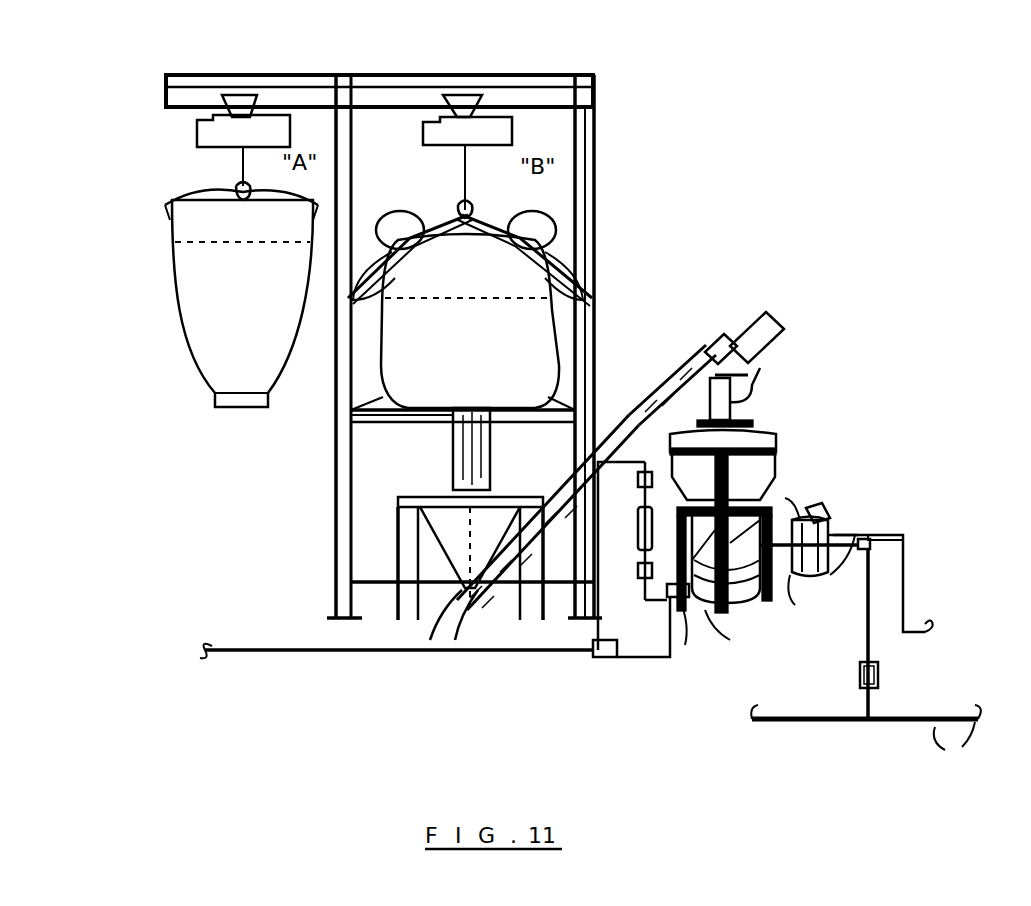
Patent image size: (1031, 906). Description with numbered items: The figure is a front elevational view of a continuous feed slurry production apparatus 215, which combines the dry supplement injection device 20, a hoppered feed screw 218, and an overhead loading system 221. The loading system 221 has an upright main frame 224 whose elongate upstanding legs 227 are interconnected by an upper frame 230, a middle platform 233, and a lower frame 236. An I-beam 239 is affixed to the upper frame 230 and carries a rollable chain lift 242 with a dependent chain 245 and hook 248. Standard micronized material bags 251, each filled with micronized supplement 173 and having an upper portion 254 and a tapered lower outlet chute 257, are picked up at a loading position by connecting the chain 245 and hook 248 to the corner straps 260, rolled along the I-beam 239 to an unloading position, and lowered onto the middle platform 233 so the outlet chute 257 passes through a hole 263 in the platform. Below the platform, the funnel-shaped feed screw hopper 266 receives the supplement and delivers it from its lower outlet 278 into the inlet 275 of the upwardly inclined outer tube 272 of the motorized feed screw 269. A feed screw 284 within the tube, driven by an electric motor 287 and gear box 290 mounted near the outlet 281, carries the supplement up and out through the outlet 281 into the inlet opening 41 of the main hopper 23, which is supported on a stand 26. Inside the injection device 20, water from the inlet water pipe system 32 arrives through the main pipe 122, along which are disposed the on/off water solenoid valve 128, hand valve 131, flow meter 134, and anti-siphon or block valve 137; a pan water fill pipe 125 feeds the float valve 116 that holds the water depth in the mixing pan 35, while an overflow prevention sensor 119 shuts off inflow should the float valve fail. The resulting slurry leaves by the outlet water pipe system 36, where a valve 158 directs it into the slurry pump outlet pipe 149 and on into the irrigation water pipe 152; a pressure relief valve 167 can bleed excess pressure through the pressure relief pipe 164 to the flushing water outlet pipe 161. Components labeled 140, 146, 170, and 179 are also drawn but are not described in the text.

The injection device 20 is at (812, 400).
The main hopper 23 is at (783, 443).
The stand 26 is at (790, 540).
The inlet water pipe system 32 is at (676, 600).
The mixing pan 35 is at (750, 615).
The outlet water pipe system 36 is at (868, 520).
The inlet opening 41 is at (750, 415).
The float valve 116 is at (697, 637).
The overflow prevention sensor 119 is at (731, 640).
The main pipe 122 is at (325, 652).
The pan water fill pipe 125 is at (615, 635).
The on/off water solenoid valve 128 is at (600, 658).
The hand valve 131 is at (636, 572).
The flow meter 134 is at (638, 530).
The anti-siphon or block valve 137 is at (625, 486).
The valve actuator 140 is at (838, 518).
The pneumatic line 146 is at (811, 596).
The slurry pump outlet pipe 149 is at (837, 565).
The irrigation water pipe 152 is at (866, 663).
The valve 158 is at (904, 556).
The flushing water outlet pipe 161 is at (918, 598).
The pressure relief pipe 164 is at (872, 540).
The pressure relief valve 167 is at (888, 528).
The valve housing 170 is at (808, 505).
The micronized supplement 173 is at (455, 460).
The valve handle 179 is at (806, 538).
The continuous feed slurry production apparatus 215 is at (698, 97).
The hoppered feed screw 218 is at (645, 368).
The overhead loading system 221 is at (465, 60).
The main frame 224 is at (602, 268).
The legs 227 is at (335, 487).
The upper frame 230 is at (600, 198).
The middle platform 233 is at (351, 408).
The lower frame 236 is at (332, 543).
The I-beam 239 is at (313, 74).
The rollable chain lift 242 is at (200, 135).
The chain 245 is at (243, 162).
The hook 248 is at (238, 184).
The micronized material bags 251 is at (178, 340).
The upper portion 254 is at (172, 242).
The tapered lower outlet chute 257 is at (215, 397).
The corner straps 260 is at (495, 218).
The hole 263 is at (500, 498).
The feed screw hopper 266 is at (430, 549).
The motorized feed screw 269 is at (742, 372).
The outer tube 272 is at (497, 408).
The inlet 275 is at (450, 612).
The lower outlet 278 is at (410, 624).
The outlet 281 is at (755, 393).
The feed screw 284 is at (499, 309).
The electric motor 287 is at (772, 325).
The gear box 290 is at (731, 333).